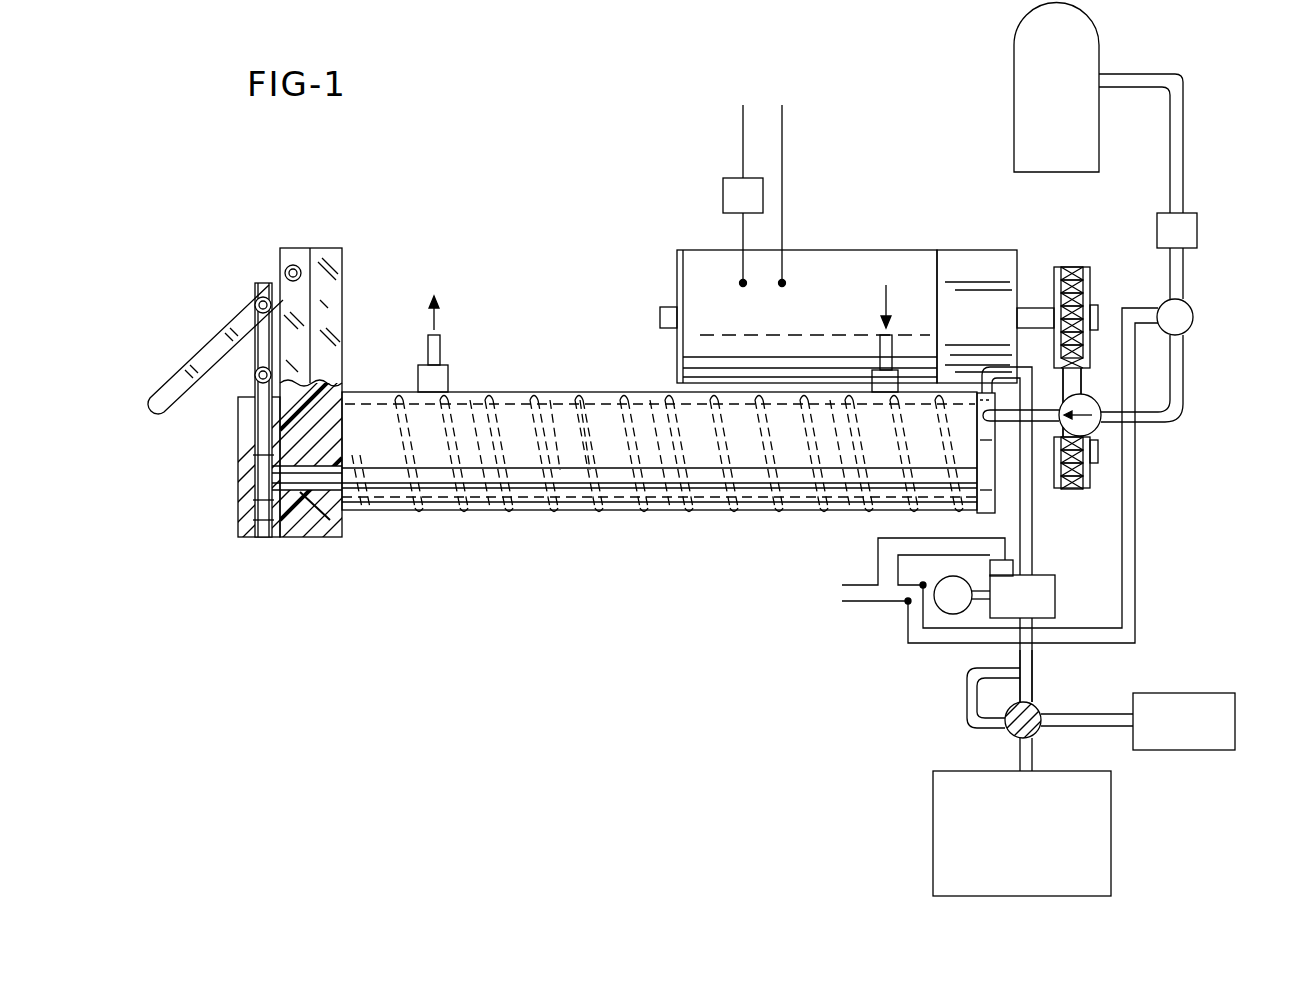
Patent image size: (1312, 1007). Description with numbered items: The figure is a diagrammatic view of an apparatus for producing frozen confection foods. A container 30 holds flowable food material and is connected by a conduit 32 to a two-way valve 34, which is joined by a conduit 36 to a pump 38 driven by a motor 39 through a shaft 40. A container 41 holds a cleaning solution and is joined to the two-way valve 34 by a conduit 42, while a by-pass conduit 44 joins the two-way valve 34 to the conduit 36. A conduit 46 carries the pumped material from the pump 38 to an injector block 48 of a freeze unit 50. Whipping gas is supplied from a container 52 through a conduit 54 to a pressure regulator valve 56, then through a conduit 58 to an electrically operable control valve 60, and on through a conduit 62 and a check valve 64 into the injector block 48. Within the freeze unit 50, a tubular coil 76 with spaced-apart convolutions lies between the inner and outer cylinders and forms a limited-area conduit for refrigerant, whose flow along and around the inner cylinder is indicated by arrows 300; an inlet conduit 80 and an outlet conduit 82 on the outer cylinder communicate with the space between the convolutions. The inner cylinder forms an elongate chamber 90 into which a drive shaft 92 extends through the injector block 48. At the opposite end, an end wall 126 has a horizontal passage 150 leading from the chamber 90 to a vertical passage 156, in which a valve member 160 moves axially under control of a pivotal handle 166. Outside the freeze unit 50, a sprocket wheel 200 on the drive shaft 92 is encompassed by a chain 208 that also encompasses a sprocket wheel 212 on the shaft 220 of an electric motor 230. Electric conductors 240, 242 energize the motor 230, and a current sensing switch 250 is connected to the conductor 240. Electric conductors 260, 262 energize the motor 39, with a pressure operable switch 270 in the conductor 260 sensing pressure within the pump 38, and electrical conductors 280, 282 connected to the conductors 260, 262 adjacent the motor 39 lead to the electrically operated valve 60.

The container 30 is at (1111, 824).
The conduit 32 is at (1032, 752).
The two-way valve 34 is at (1008, 732).
The conduit 36 is at (1032, 688).
The pump 38 is at (1055, 608).
The motor 39 is at (948, 571).
The shaft 40 is at (977, 605).
The container 41 is at (1205, 693).
The conduit 42 is at (1088, 728).
The by-pass conduit 44 is at (968, 692).
The conduit 46 is at (1033, 527).
The injector block 48 is at (984, 516).
The freeze unit 50 is at (570, 506).
The container 52 is at (1014, 35).
The conduit 54 is at (1184, 146).
The pressure regulator valve 56 is at (1155, 225).
The conduit 58 is at (1183, 285).
The electrically operable control valve 60 is at (1194, 318).
The conduit 62 is at (1183, 384).
The check valve 64 is at (1096, 424).
The tubular coil 76 is at (612, 397).
The inlet conduit 80 is at (880, 342).
The outlet conduit 82 is at (440, 354).
The elongate chamber 90 is at (764, 450).
The drive shaft 92 is at (1042, 463).
The end wall 126 is at (342, 350).
The horizontal passage 150 is at (310, 494).
The vertical passage 156 is at (262, 537).
The valve member 160 is at (256, 440).
The pivotal handle 166 is at (190, 350).
The sprocket wheel 200 is at (1090, 478).
The chain 208 is at (1096, 374).
The sprocket wheel 212 is at (1092, 292).
The shaft 220 is at (1044, 358).
The electric motor 230 is at (862, 293).
The electric conductor 240 is at (736, 125).
The electric conductor 242 is at (785, 225).
The current sensing switch 250 is at (734, 176).
The electric conductor 260 is at (845, 583).
The electric conductor 262 is at (858, 604).
The pressure operable switch 270 is at (1013, 570).
The electrical conductor 280 is at (1122, 542).
The electrical conductor 282 is at (1137, 578).
The arrows 300 is at (484, 506).